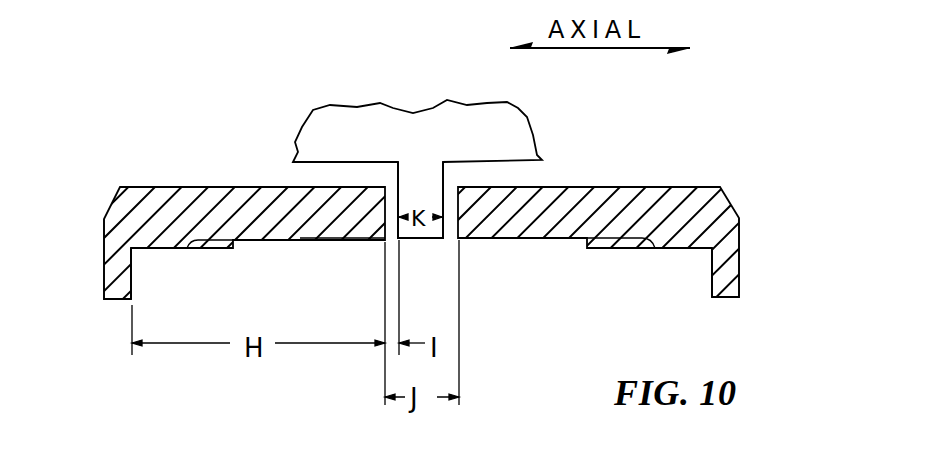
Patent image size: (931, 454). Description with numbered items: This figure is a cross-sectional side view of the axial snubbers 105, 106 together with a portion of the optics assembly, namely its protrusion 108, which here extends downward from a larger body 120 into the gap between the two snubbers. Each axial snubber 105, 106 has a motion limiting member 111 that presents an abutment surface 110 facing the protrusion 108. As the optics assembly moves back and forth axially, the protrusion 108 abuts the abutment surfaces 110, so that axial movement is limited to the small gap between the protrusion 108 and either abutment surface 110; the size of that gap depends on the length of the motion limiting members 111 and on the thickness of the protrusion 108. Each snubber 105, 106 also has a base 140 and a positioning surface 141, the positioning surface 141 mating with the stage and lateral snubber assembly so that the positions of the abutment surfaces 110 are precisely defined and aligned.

The axial snubber 105 is at (147, 185).
The axial snubber 106 is at (698, 185).
The adjacent component 120 is at (380, 105).
The abutment surface 110 is at (410, 182).
The protrusion 108 is at (397, 180).
The motion limiting member 111 is at (325, 222).
The base 140 is at (103, 287).
The positioning surface 141 is at (132, 293).